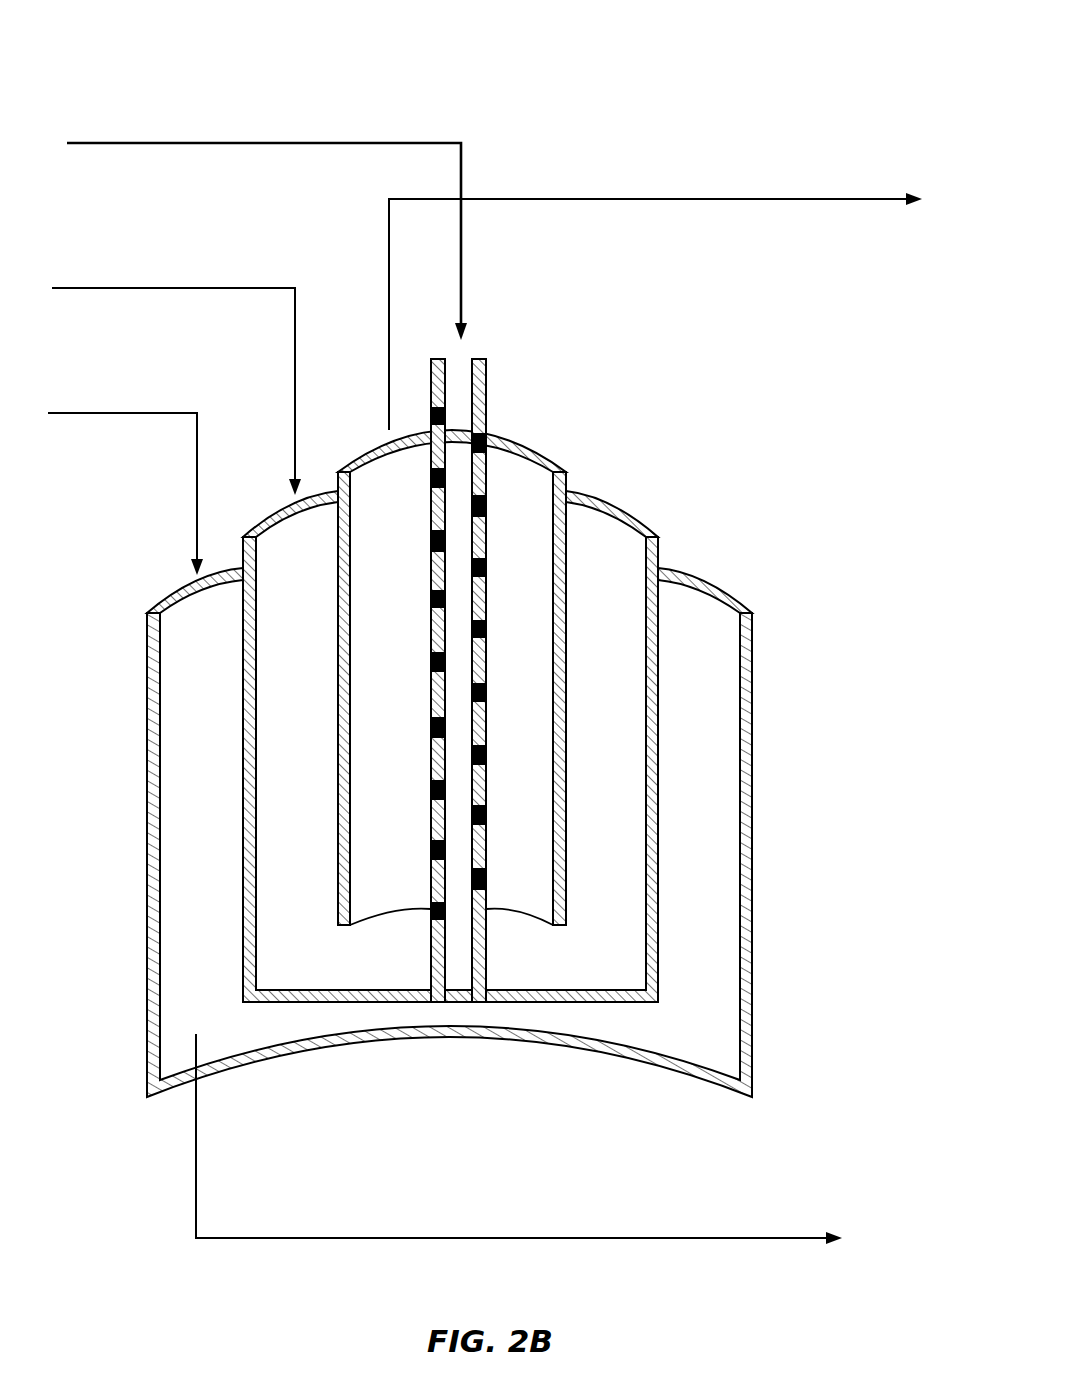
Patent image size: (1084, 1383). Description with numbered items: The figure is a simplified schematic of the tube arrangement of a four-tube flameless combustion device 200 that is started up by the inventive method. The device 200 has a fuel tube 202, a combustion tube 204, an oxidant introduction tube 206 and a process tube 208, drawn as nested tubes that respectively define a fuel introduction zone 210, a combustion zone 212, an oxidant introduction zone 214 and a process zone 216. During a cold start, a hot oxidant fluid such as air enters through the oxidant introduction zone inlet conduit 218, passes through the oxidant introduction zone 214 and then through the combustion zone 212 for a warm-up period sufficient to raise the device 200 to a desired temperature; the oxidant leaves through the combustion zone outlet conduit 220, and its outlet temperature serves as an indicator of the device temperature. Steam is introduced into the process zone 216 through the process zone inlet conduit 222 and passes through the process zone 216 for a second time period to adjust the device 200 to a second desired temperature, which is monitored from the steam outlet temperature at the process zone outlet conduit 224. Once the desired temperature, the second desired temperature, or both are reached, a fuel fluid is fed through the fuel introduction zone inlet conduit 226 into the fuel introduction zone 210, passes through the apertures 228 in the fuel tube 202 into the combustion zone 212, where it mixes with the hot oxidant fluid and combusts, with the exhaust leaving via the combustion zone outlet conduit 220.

The four-tube flameless combustion device 200 is at (622, 38).
The fuel tube 202 is at (488, 390).
The combustion tube 204 is at (568, 484).
The oxidant introduction tube 206 is at (660, 553).
The process tube 208 is at (753, 672).
The fuel introduction zone 210 is at (460, 540).
The combustion zone 212 is at (413, 680).
The oxidant introduction zone 214 is at (322, 761).
The process zone 216 is at (227, 848).
The oxidant introduction zone inlet conduit 218 is at (160, 288).
The combustion zone outlet conduit 220 is at (573, 199).
The process zone inlet conduit 222 is at (160, 413).
The process zone outlet conduit 224 is at (381, 1238).
The fuel introduction zone inlet conduit 226 is at (160, 143).
The apertures 228 is at (431, 416).